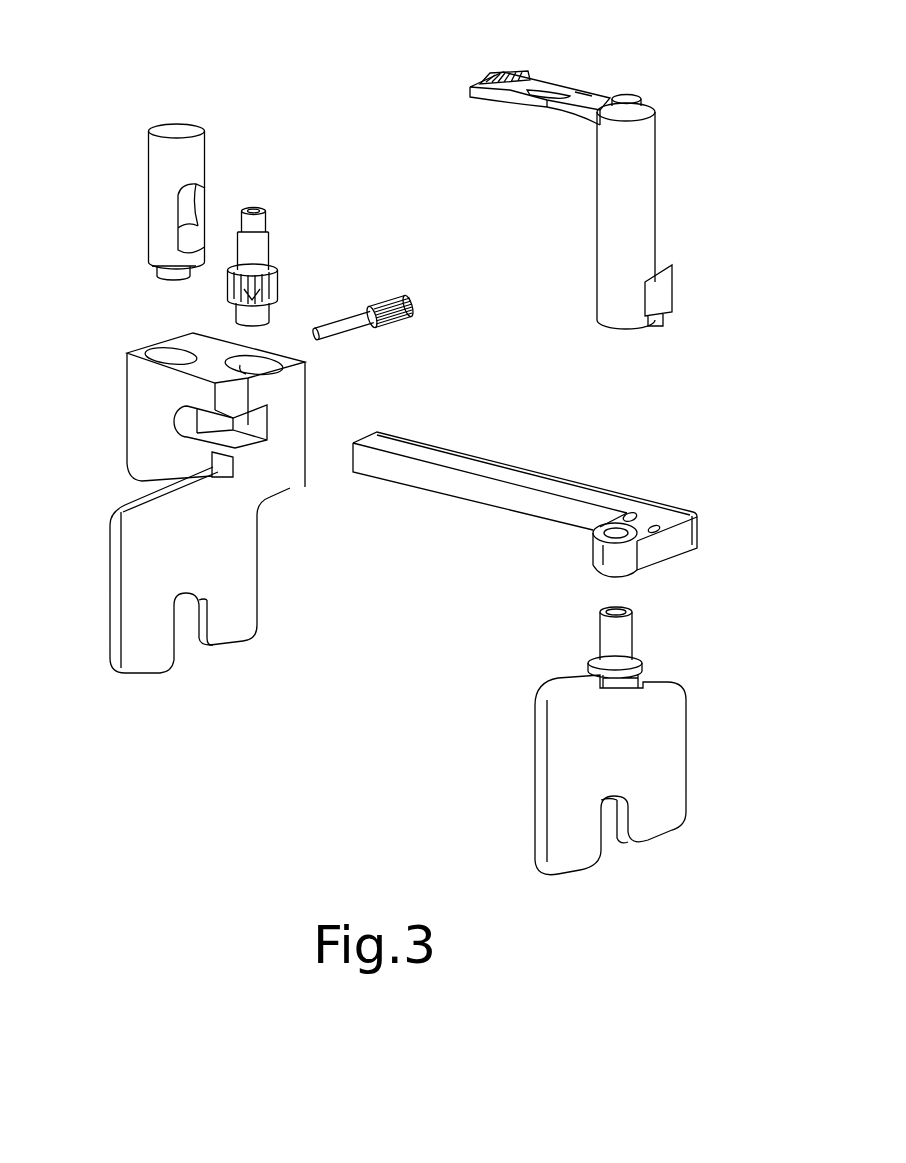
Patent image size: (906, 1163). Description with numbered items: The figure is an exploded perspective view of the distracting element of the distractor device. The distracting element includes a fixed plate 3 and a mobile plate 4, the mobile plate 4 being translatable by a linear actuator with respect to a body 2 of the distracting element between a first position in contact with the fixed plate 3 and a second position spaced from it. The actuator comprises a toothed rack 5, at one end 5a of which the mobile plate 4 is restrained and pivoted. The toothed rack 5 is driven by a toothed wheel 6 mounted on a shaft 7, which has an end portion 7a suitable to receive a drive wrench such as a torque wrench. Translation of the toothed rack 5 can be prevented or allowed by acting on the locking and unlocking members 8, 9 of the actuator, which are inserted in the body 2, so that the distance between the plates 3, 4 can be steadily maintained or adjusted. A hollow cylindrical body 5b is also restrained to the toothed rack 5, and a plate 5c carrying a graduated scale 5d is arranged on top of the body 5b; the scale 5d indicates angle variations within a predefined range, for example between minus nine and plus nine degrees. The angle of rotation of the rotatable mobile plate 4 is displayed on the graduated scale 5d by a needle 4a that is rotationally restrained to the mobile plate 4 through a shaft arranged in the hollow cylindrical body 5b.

The body 2 is at (282, 458).
The fixed plate 3 is at (227, 613).
The mobile plate 4 is at (650, 812).
The needle 4a is at (583, 93).
The toothed rack 5 is at (677, 517).
The end of toothed rack 5a is at (628, 550).
The hollow cylindrical body 5b is at (653, 196).
The plate 5c is at (530, 106).
The graduated scale 5d is at (492, 82).
The toothed wheel 6 is at (275, 286).
The shaft 7 is at (262, 244).
The end portion 7a is at (253, 212).
The locking and unlocking member 8 is at (406, 298).
The locking and unlocking member 9 is at (177, 132).